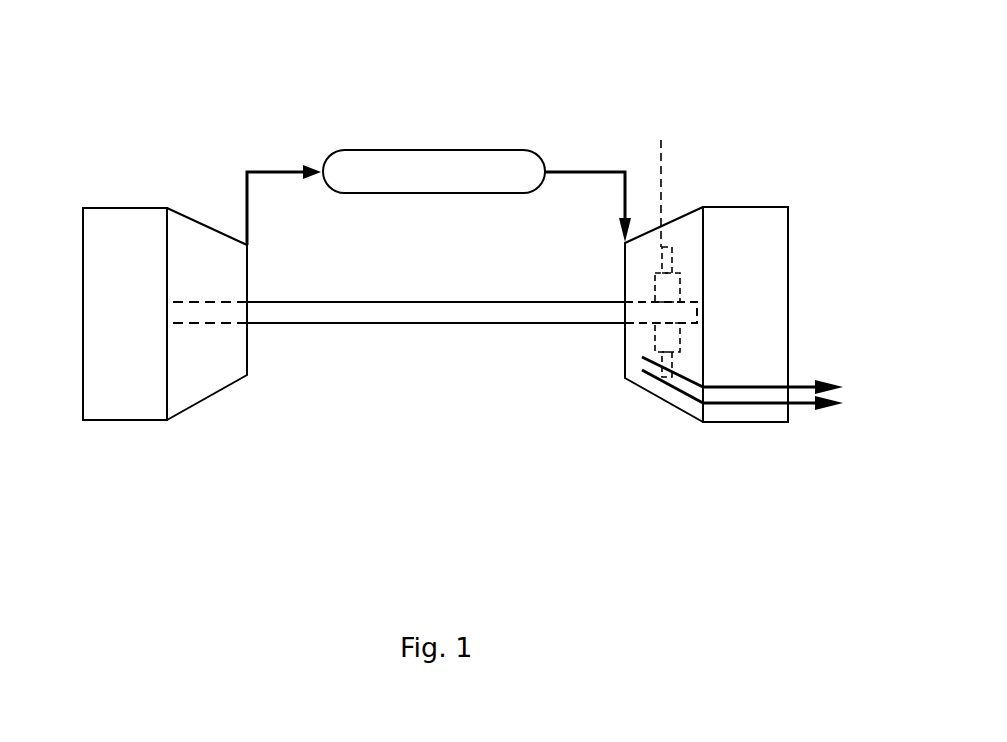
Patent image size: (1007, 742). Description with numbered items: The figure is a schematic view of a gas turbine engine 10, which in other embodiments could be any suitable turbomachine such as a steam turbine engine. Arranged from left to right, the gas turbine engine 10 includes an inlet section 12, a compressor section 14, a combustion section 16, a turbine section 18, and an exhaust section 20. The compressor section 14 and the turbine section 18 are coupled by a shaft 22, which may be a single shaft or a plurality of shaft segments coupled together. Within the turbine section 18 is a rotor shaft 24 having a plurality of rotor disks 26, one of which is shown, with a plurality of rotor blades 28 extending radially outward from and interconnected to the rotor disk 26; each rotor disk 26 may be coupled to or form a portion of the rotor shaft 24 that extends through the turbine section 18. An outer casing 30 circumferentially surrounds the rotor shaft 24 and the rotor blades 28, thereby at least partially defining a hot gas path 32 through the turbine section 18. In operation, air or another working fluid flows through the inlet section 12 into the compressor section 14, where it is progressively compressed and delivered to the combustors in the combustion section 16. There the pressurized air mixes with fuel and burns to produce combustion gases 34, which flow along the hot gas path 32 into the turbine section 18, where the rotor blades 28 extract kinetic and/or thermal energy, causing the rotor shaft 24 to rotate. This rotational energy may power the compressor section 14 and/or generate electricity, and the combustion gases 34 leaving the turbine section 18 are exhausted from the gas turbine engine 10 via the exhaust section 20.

The gas turbine engine 10 is at (290, 84).
The inlet section 12 is at (105, 208).
The compressor section 14 is at (197, 222).
The combustion section 16 is at (483, 150).
The turbine section 18 is at (693, 212).
The exhaust section 20 is at (753, 207).
The shaft 22 is at (400, 323).
The rotor shaft 24 is at (690, 302).
The rotor disk 26 is at (655, 290).
The rotor blades 28 is at (661, 140).
The outer casing 30 is at (680, 408).
The hot gas path 32 is at (672, 390).
The combustion gases 34 is at (593, 172).